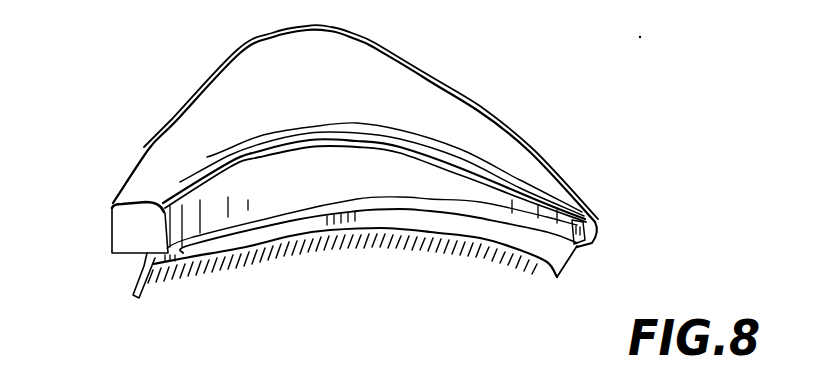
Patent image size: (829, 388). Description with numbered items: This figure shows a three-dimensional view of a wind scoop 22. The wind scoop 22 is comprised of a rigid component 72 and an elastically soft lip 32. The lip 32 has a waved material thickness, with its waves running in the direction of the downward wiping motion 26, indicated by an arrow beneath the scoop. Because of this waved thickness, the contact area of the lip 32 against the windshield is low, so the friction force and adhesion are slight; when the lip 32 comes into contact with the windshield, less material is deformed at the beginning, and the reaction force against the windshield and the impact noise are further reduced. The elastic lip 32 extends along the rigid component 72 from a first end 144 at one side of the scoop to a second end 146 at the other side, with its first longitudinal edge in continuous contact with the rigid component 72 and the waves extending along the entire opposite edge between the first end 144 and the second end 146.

The wind scoop 22 is at (232, 45).
The rigid component 72 is at (197, 127).
The first end 144 is at (130, 290).
The downward wiping motion 26 is at (338, 265).
The elastically soft lip 32 is at (558, 279).
The second end 146 is at (587, 249).